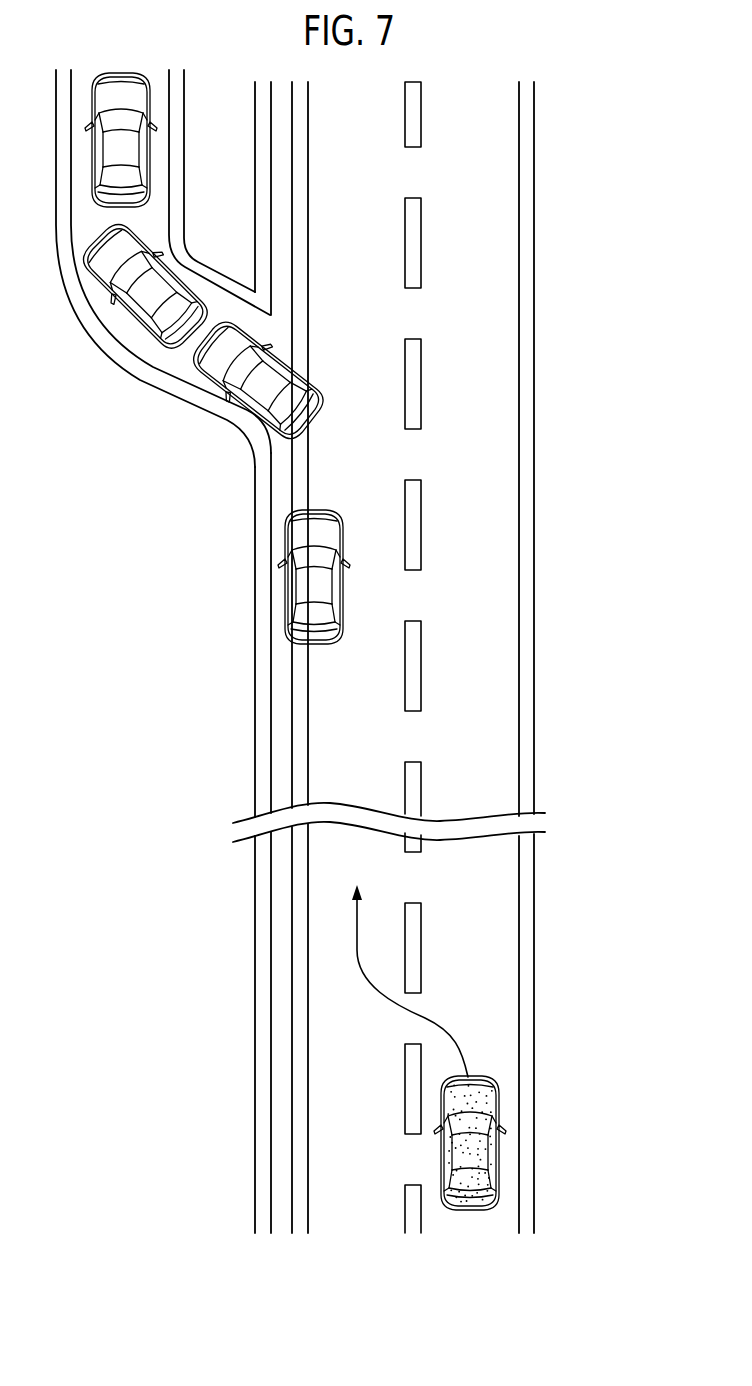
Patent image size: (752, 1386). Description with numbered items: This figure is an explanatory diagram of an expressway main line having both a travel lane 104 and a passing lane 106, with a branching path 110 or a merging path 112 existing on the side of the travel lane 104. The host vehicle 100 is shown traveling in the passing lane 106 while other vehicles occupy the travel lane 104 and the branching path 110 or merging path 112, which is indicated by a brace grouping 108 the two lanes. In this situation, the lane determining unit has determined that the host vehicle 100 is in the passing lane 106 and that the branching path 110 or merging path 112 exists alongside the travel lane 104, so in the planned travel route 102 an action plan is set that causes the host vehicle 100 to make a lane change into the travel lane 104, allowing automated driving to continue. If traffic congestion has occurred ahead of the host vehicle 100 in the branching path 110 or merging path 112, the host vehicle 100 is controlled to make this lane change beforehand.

The host vehicle 100 is at (497, 1155).
The planned travel route 102 is at (538, 497).
The travel lane 104 is at (473, 225).
The passing lane 106 is at (373, 175).
The lanes (traveling lane and adjacent lane) 108 is at (613, 157).
The branching path 110 is at (150, 273).
The merging path 112 is at (152, 392).